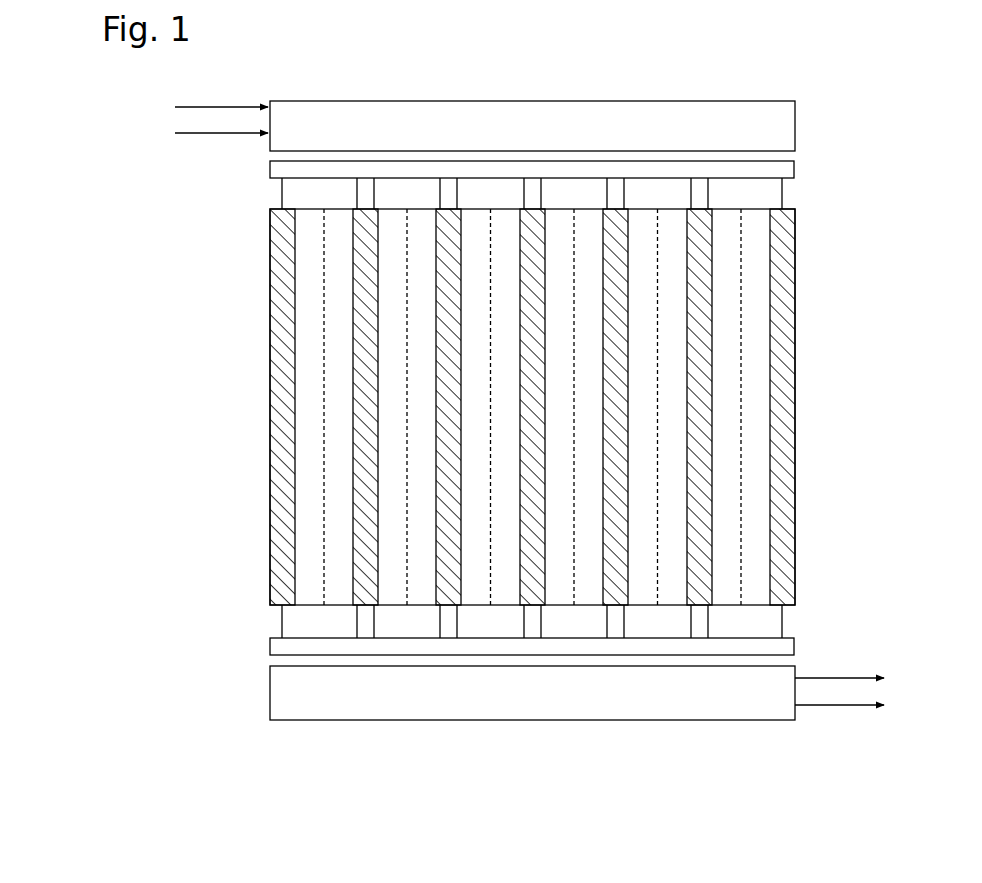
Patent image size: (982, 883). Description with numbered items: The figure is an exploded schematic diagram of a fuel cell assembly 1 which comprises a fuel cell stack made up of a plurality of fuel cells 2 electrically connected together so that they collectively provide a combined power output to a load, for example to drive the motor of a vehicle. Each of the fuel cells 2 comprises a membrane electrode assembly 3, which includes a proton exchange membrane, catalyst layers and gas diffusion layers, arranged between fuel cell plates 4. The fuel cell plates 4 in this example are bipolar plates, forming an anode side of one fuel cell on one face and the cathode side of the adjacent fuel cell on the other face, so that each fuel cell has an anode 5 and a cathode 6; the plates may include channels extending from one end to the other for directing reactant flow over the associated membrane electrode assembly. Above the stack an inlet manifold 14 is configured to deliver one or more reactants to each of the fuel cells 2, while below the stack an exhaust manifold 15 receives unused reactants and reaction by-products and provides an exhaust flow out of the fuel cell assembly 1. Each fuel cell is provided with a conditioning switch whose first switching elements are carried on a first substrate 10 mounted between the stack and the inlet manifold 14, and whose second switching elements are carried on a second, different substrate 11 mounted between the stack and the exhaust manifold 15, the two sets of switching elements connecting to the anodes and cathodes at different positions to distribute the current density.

The fuel cell assembly 1 is at (90, 321).
The fuel cells 2 is at (417, 395).
The membrane electrode assembly 3 is at (312, 504).
The fuel cell plates 4 is at (370, 570).
The anode 5 is at (305, 270).
The cathode 6 is at (348, 318).
The first substrate 10 is at (270, 165).
The second substrate 11 is at (270, 643).
The inlet manifold 14 is at (530, 120).
The exhaust manifold 15 is at (502, 695).